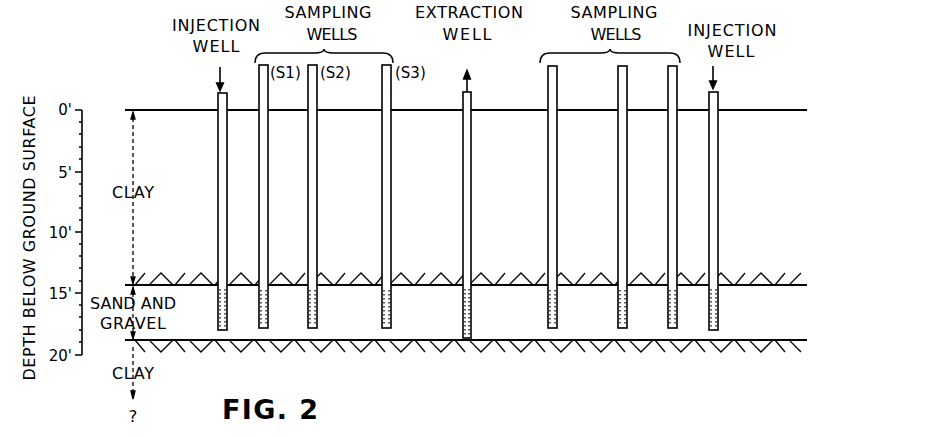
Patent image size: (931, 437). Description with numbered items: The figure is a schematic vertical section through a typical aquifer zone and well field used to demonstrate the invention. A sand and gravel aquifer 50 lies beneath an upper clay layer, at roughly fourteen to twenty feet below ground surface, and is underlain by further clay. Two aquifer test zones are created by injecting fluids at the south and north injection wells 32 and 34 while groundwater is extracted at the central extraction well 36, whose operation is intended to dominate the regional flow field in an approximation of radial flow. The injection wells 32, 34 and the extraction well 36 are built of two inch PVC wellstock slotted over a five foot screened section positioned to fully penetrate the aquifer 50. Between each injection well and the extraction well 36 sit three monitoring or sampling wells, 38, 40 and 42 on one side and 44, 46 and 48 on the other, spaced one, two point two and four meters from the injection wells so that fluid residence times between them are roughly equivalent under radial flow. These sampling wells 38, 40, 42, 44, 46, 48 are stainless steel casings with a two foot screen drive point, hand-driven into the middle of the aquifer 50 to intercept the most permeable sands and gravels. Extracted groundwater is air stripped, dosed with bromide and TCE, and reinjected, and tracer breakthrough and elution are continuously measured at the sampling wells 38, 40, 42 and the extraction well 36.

The south injection well 32 is at (218, 96).
The north injection well 34 is at (718, 97).
The central extraction well 36 is at (471, 97).
The monitoring or sampling well S1 38 is at (268, 293).
The monitoring or sampling well S2 40 is at (317, 293).
The monitoring or sampling well S3 42 is at (391, 293).
The monitoring or sampling well 44 is at (557, 293).
The monitoring or sampling well 46 is at (627, 293).
The monitoring or sampling well 48 is at (677, 293).
The aquifer 50 is at (752, 311).